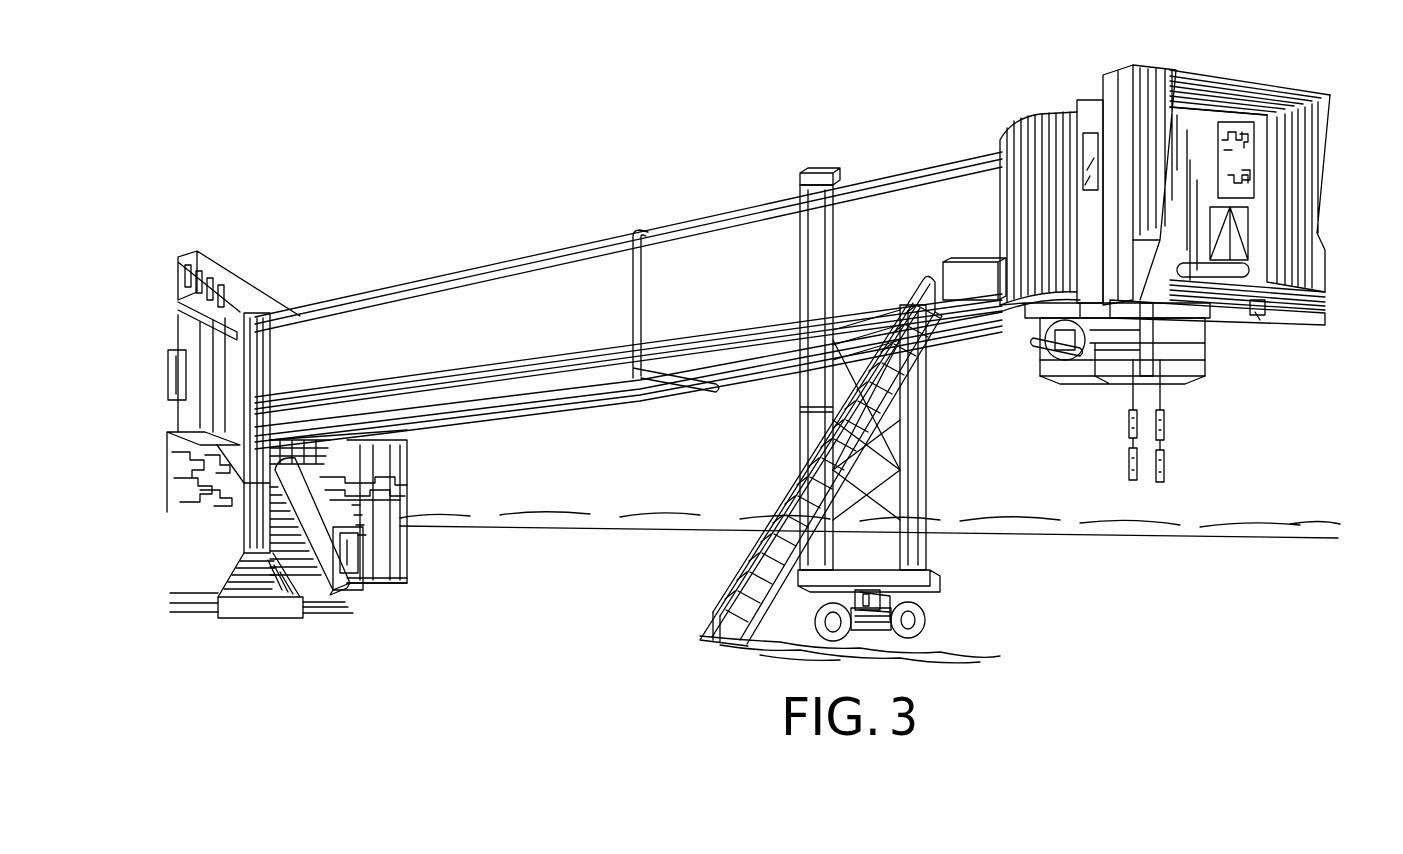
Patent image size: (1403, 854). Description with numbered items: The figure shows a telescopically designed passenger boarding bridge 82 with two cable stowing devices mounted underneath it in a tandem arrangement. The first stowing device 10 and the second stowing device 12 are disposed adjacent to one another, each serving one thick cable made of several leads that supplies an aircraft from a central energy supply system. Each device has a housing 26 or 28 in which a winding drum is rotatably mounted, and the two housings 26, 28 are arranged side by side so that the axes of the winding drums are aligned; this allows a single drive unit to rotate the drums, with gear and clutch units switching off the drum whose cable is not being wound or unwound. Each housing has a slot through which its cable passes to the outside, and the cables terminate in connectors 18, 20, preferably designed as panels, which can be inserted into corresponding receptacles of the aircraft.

The passenger boarding bridge 82 is at (629, 132).
The housing 26 is at (1190, 338).
The stowing device 10 is at (1190, 370).
The stowing device 12 is at (1108, 365).
The housing 28 is at (1063, 372).
The connector 20 is at (1130, 440).
The connector 18 is at (1165, 440).